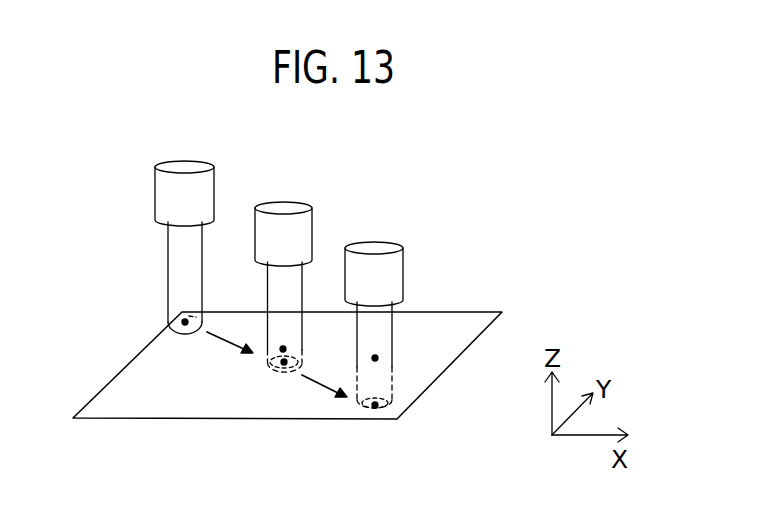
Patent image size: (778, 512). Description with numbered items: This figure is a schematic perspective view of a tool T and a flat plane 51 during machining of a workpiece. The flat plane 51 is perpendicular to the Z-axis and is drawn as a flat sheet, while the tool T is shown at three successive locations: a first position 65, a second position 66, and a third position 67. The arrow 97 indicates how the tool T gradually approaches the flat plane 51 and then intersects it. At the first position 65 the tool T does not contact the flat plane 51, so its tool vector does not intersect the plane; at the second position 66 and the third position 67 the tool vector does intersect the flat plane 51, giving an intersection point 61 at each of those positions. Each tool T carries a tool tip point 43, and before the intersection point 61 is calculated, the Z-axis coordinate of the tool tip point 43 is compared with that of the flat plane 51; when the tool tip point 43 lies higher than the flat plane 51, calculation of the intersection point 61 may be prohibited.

The flat plane 51 is at (465, 325).
The first position 65 is at (155, 197).
The second position 66 is at (255, 235).
The third position 67 is at (345, 275).
The tool T is at (202, 185).
The intersection point 61 is at (283, 349).
The tool tip point 43 is at (172, 333).
The arrow 97 is at (230, 343).